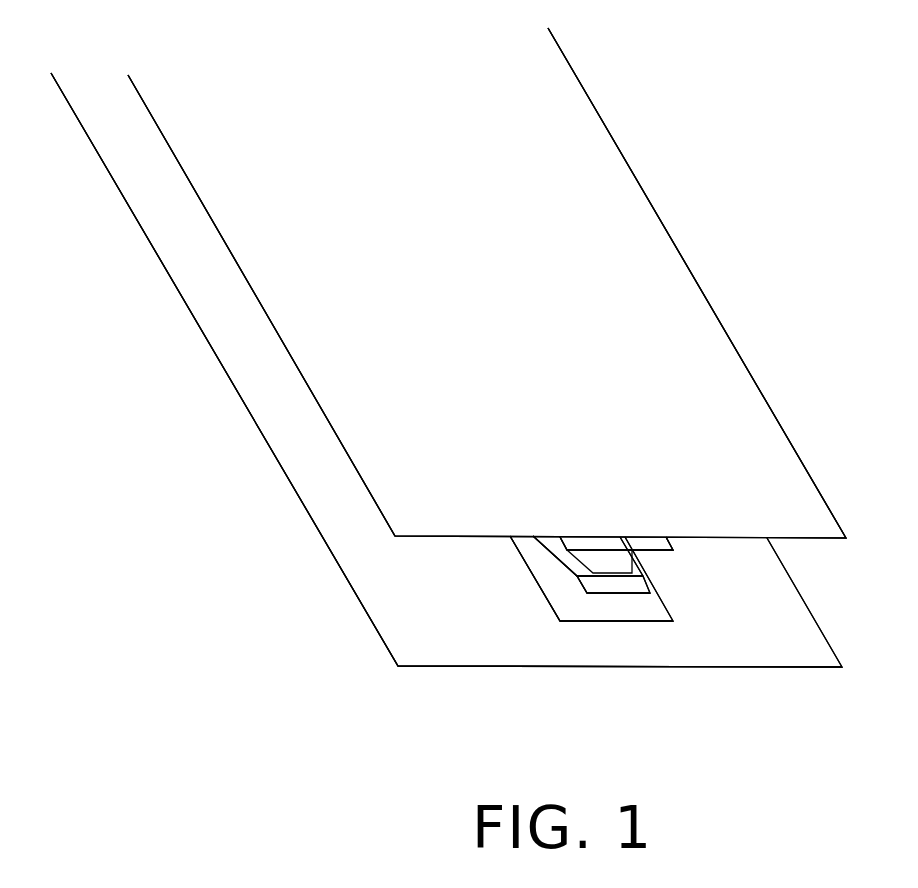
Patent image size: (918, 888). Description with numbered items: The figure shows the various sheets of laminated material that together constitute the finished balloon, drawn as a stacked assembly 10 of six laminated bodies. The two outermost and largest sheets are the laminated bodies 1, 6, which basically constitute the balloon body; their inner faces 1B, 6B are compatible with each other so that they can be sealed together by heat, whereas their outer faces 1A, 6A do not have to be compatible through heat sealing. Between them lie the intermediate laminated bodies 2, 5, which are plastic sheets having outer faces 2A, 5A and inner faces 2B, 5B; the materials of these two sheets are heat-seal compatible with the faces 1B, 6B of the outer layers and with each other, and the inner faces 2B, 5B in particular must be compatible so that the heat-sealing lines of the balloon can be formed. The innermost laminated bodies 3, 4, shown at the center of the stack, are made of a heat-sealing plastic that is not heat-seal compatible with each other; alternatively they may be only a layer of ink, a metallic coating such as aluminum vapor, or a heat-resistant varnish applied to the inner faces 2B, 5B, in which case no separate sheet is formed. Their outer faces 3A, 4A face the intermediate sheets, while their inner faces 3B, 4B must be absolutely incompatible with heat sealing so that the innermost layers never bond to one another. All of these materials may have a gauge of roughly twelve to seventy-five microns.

The bonded assembly 10 is at (629, 107).
The laminated body 1 is at (662, 222).
The outer face 1A is at (645, 378).
The inner face 1B is at (213, 240).
The intermediate sheet 2 is at (673, 550).
The outer face 2A is at (662, 545).
The inner face 2B is at (643, 553).
The innermost laminated body 3 is at (533, 535).
The outer face 3A is at (615, 563).
The inner face 3B is at (545, 577).
The innermost laminated body 4 is at (627, 605).
The outer face 4A is at (608, 600).
The inner face 4B is at (660, 572).
The intermediate sheet 5 is at (555, 595).
The outer face 5A is at (553, 617).
The inner face 5B is at (547, 577).
The laminated body 6 is at (352, 593).
The outer face 6A is at (251, 418).
The inner face 6B is at (258, 390).